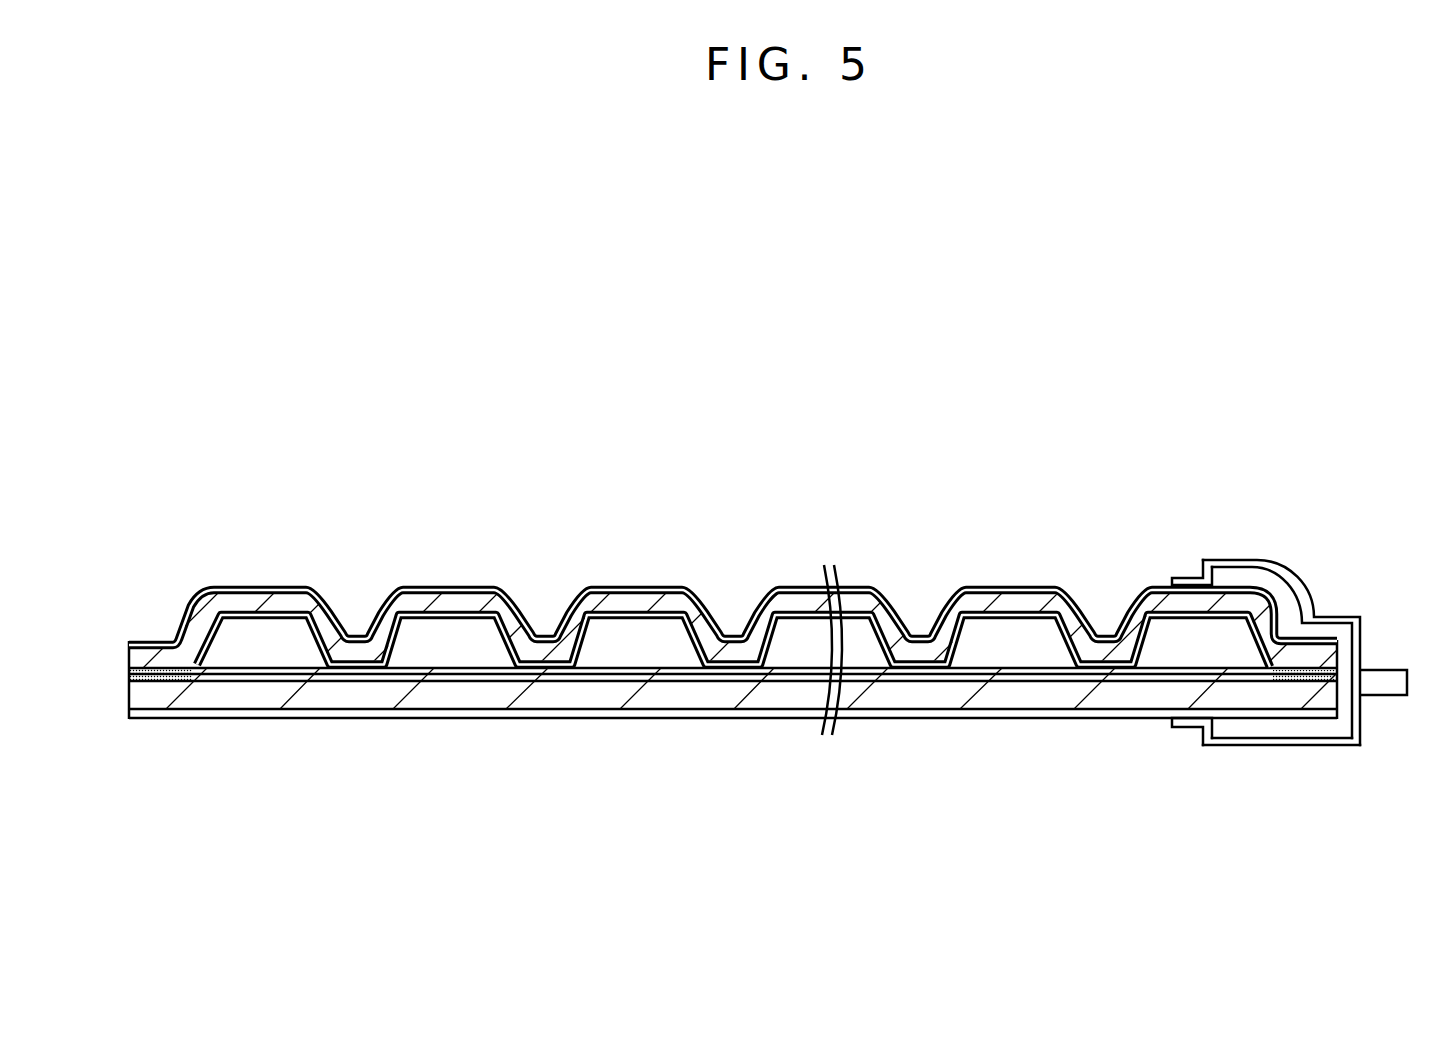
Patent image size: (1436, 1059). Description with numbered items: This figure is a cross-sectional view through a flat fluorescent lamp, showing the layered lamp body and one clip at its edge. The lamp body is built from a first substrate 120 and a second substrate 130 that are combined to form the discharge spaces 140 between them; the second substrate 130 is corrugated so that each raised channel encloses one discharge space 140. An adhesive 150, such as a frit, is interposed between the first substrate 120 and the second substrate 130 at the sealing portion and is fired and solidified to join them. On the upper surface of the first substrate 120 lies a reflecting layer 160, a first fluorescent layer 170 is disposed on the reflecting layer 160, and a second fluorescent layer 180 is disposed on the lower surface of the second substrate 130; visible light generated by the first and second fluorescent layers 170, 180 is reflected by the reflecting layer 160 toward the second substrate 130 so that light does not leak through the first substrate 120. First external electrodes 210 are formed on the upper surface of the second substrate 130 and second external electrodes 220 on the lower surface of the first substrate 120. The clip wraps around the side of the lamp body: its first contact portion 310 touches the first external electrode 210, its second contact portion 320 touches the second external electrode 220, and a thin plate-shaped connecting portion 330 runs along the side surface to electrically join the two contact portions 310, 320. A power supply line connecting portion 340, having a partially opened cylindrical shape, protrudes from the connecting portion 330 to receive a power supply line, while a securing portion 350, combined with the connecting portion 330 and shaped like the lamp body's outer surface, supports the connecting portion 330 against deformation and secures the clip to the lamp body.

The first substrate 120 is at (1107, 692).
The second substrate 130 is at (862, 602).
The discharge spaces 140 is at (1017, 640).
The adhesive 150 is at (1280, 672).
The reflecting layer 160 is at (918, 679).
The first fluorescent layer 170 is at (968, 674).
The second fluorescent layer 180 is at (800, 613).
The first external electrodes 210 is at (642, 586).
The second external electrodes 220 is at (1037, 711).
The first contact portion 310 is at (1188, 577).
The second contact portion 320 is at (1190, 722).
The connecting portion 330 is at (1323, 616).
The power supply line connecting portion 340 is at (1394, 671).
The securing portion 350 is at (1345, 728).